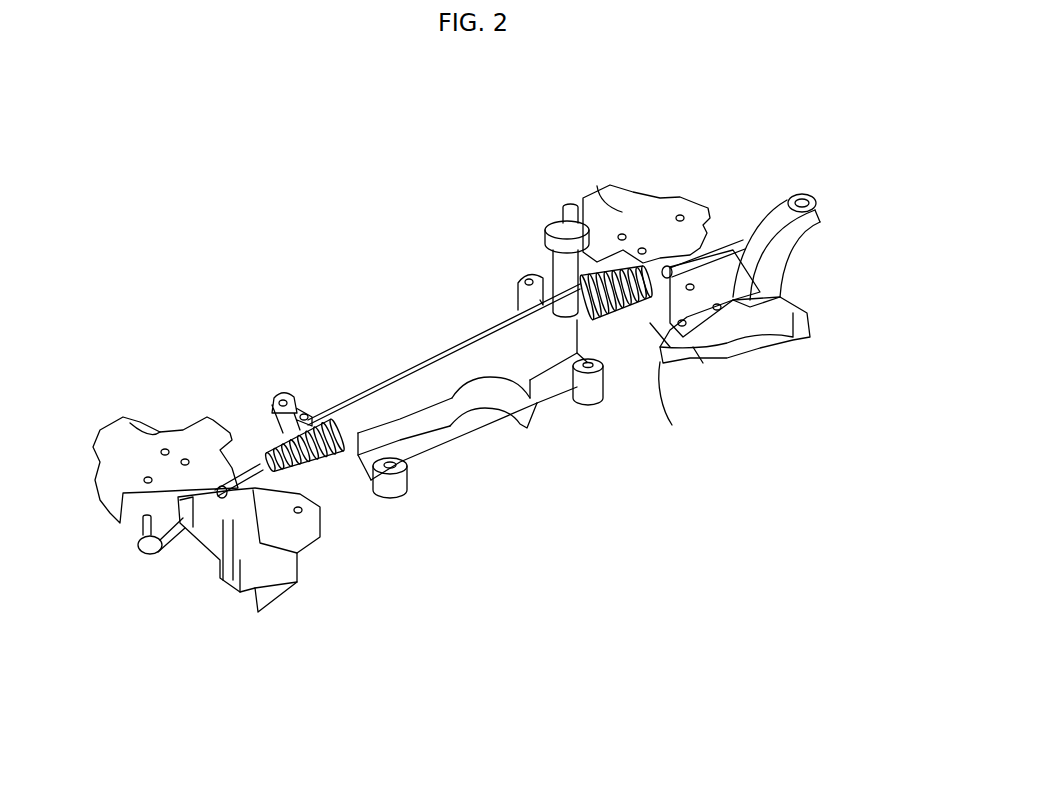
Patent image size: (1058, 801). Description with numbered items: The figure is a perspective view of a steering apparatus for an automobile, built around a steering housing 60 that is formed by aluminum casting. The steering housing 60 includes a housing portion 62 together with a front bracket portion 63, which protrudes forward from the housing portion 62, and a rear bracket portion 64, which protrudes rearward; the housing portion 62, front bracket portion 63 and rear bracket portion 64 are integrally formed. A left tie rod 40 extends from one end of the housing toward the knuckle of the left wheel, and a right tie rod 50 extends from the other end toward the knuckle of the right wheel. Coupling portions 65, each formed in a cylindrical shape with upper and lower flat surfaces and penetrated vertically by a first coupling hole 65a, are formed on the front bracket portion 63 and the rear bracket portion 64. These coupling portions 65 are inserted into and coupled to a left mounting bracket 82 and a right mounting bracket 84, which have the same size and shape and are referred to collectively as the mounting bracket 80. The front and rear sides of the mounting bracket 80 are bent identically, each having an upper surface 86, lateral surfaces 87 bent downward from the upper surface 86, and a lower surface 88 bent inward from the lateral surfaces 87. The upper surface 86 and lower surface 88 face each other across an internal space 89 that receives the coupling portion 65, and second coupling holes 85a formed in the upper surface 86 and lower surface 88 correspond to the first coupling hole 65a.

The left tie rod 40 is at (230, 433).
The right tie rod 50 is at (801, 210).
The steering housing 60 is at (467, 478).
The housing portion 62 is at (420, 385).
The front bracket portion 63 is at (420, 370).
The rear bracket portion 64 is at (457, 423).
The coupling portion 65 is at (517, 291).
The first coupling hole 65a is at (521, 278).
The mounting bracket 80 is at (278, 617).
The left mounting bracket 82 is at (128, 420).
The right mounting bracket 84 is at (603, 190).
The second coupling hole 85a is at (770, 300).
The upper surface 86 is at (767, 323).
The lateral surface 87 is at (694, 350).
The lower surface 88 is at (660, 350).
The internal space 89 is at (672, 300).